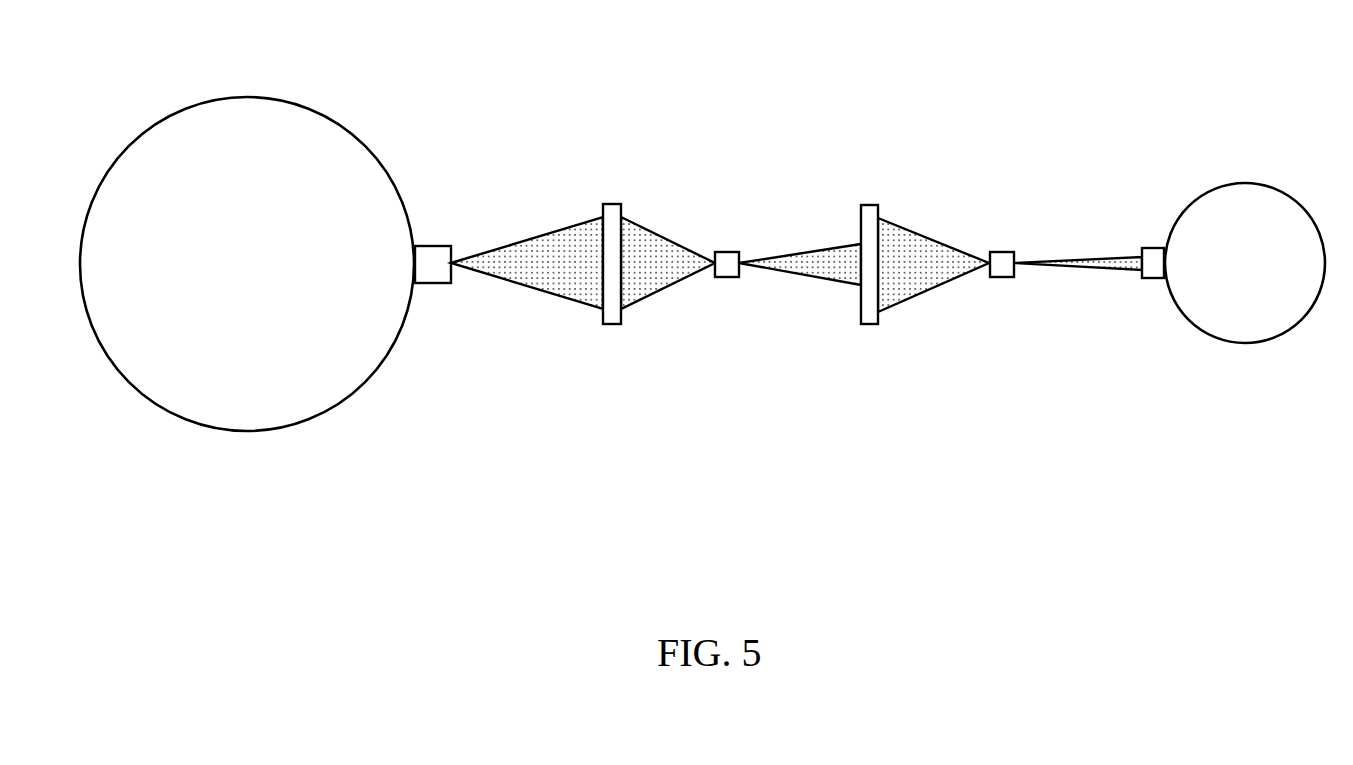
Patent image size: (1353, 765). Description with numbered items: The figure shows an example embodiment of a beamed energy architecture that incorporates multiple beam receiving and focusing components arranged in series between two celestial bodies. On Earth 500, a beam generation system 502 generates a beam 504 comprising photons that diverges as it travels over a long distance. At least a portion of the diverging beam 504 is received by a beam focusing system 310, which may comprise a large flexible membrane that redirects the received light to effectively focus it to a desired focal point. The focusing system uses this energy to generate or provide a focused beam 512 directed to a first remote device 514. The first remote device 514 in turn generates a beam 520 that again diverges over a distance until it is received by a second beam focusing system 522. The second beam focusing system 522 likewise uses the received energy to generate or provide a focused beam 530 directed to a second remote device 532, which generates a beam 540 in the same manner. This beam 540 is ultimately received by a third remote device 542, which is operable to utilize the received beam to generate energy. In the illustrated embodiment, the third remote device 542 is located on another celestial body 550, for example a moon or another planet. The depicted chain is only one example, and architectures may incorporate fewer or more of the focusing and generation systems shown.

The Earth 500 is at (296, 101).
The beam generation system 502 is at (433, 284).
The beam 504 is at (532, 238).
The beam focusing system 310 is at (613, 324).
The focused beam 512 is at (667, 290).
The first remote device 514 is at (728, 251).
The beam 520 is at (807, 250).
The second beam focusing system 522 is at (872, 324).
The focused beam 530 is at (935, 238).
The second remote device 532 is at (1002, 252).
The beam 540 is at (1077, 258).
The third remote device 542 is at (1155, 278).
The celestial body 550 is at (1268, 185).